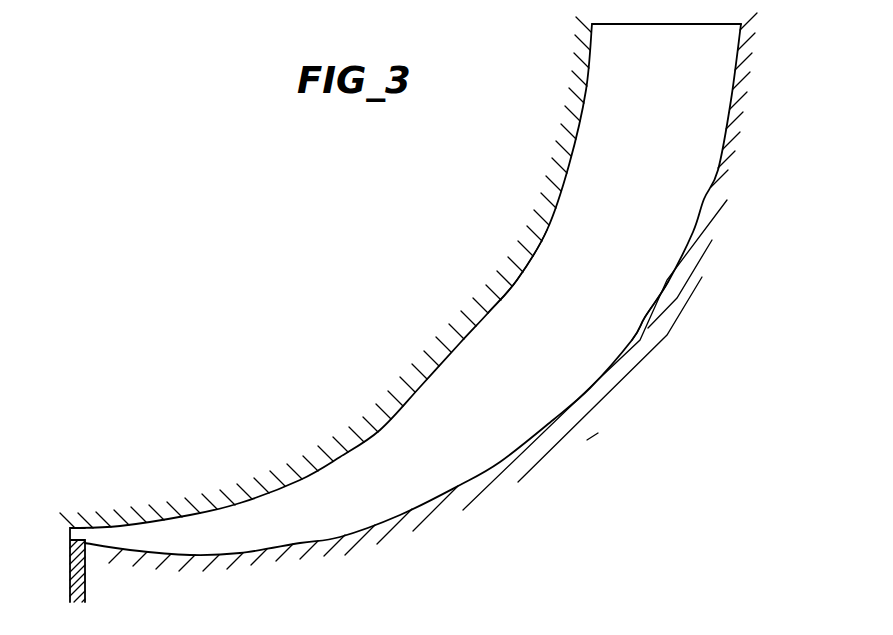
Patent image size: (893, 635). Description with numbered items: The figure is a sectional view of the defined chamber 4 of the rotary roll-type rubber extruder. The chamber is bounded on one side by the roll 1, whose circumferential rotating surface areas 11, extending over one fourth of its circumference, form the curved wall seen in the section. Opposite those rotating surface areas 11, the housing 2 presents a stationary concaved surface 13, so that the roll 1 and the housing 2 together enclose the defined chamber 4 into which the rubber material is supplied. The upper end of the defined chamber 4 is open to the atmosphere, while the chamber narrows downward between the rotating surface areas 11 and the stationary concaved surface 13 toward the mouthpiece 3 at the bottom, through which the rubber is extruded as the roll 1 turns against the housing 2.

The roll 1 is at (590, 45).
The housing 2 is at (737, 63).
The mouthpiece 3 is at (72, 573).
The defined chamber 4 is at (660, 232).
The rotating surface areas 11 is at (516, 286).
The stationary concaved surface 13 is at (638, 326).